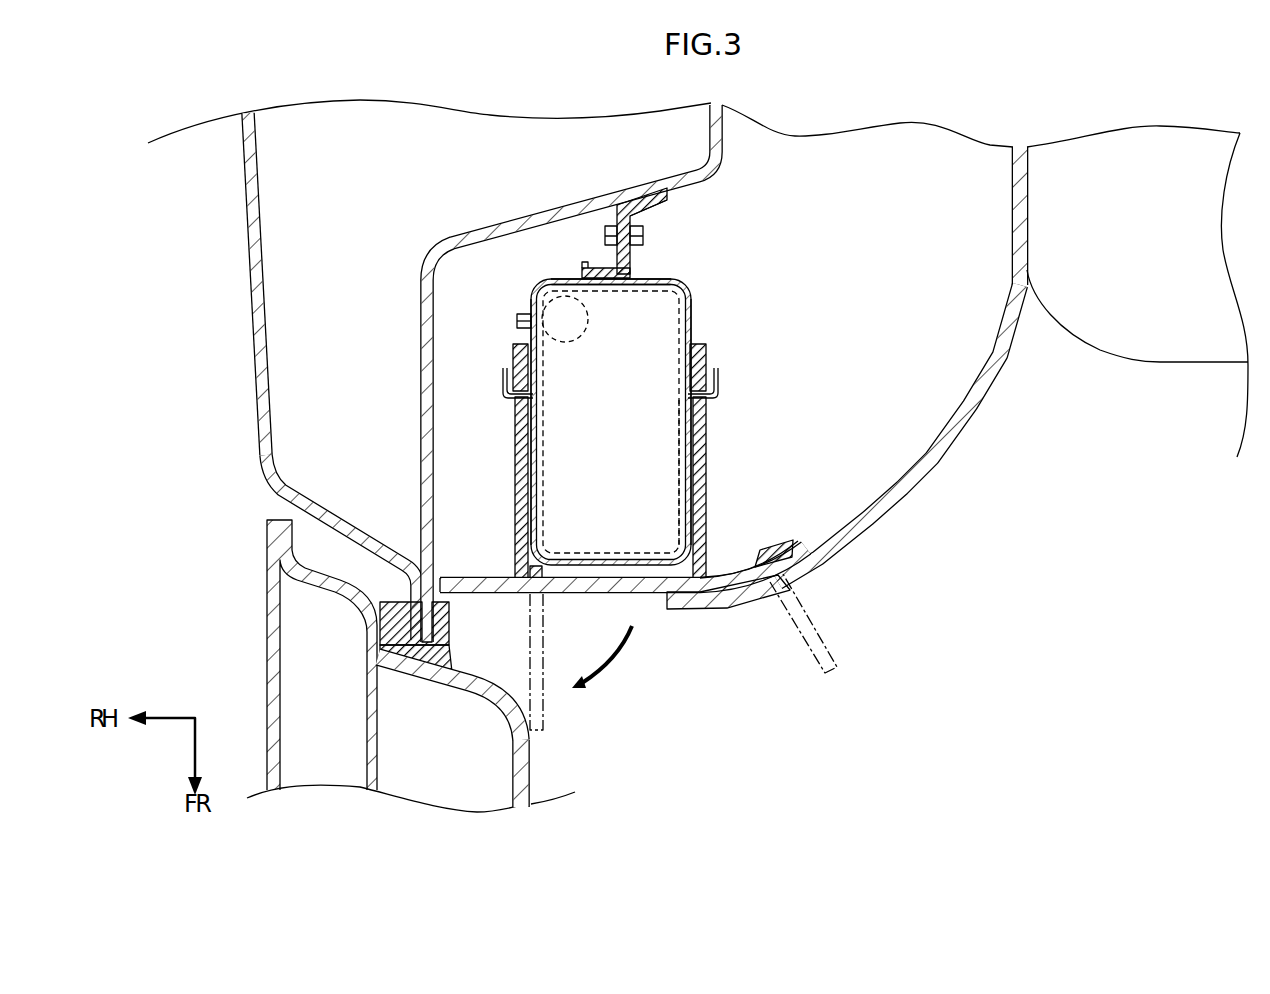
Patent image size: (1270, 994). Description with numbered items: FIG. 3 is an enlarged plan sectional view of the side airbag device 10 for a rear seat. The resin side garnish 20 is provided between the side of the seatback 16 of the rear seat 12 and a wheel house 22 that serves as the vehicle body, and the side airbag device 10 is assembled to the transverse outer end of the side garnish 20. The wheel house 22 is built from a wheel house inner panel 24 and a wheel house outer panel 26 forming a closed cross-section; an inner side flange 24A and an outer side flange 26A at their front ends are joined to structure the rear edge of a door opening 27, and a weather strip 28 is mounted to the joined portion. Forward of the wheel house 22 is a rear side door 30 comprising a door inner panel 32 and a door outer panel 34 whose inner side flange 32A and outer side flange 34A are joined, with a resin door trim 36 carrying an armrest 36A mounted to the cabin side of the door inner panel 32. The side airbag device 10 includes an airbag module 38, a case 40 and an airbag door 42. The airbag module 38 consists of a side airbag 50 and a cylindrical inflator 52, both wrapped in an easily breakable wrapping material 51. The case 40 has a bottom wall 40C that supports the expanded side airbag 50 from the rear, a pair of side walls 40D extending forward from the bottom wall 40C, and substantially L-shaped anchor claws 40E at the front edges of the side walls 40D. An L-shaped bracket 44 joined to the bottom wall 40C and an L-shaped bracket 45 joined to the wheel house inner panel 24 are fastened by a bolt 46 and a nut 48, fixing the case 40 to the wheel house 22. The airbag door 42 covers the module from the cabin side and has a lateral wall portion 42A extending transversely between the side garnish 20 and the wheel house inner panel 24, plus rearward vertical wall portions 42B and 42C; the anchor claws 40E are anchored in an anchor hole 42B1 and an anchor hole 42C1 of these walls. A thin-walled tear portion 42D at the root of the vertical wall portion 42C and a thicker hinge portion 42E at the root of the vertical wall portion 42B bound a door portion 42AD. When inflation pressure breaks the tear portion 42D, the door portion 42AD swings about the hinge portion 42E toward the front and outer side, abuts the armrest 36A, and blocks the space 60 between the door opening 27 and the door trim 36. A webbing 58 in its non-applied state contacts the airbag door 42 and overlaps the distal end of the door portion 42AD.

The side airbag device for a rear seat 10 is at (762, 288).
The rear seat 12 is at (1134, 286).
The seatback 16 is at (1152, 364).
The side garnish 20 is at (945, 458).
The wheel house 22 is at (150, 385).
The wheel house inner panel 24 is at (413, 347).
The inner side flange 24A is at (446, 608).
The wheel house outer panel 26 is at (254, 385).
The outer side flange 26A is at (411, 590).
The door opening 27 is at (418, 673).
The weather strip 28 is at (443, 662).
The rear side door 30 is at (195, 578).
The door inner panel 32 is at (364, 652).
The inner side flange 32A is at (287, 522).
The door outer panel 34 is at (262, 706).
The outer side flange 34A is at (264, 530).
The door trim 36 is at (603, 773).
The armrest 36A is at (531, 793).
The airbag module 38 is at (652, 593).
The case 40 is at (530, 277).
The bottom wall 40C is at (655, 278).
The side walls 40D is at (529, 300).
The anchor claws 40E is at (513, 365).
The airbag door garnish 42 is at (718, 548).
The lateral wall portion 42A is at (645, 596).
The door portion 42AD is at (584, 594).
The vertical wall portion 42B is at (513, 502).
The anchor hole 42B1 is at (520, 420).
The vertical wall portion 42C is at (710, 450).
The anchor hole 42C1 is at (702, 423).
The tear portion 42D is at (706, 607).
The hinge portion 42E is at (518, 594).
The L-shaped bracket 44 is at (594, 268).
The L-shaped bracket 45 is at (660, 191).
The bolt 46 is at (646, 237).
The nut 48 is at (613, 228).
The side airbag 50 is at (684, 466).
The wrapping material 51 is at (528, 570).
The inflator 52 is at (560, 296).
The webbing 58 is at (738, 612).
The space 60 is at (496, 661).